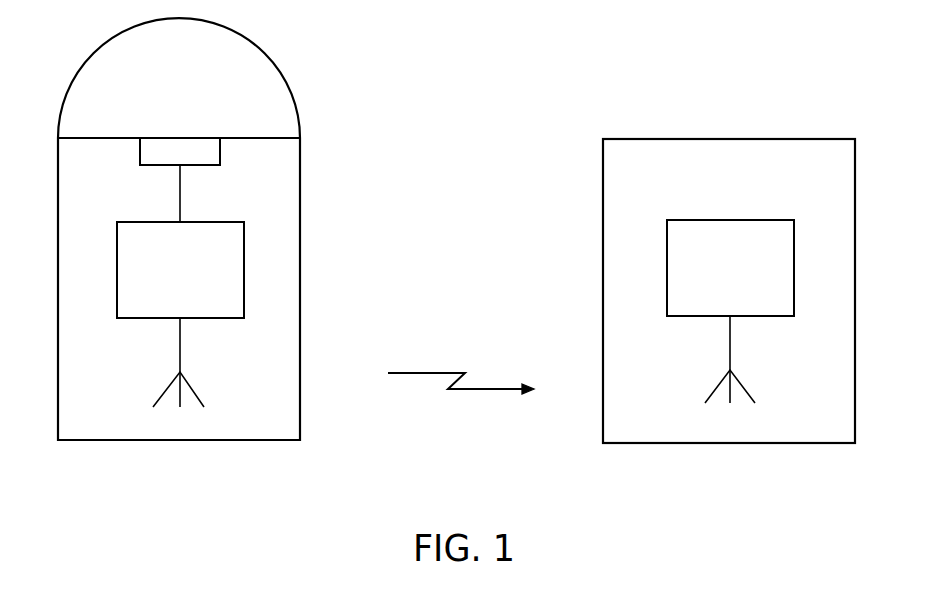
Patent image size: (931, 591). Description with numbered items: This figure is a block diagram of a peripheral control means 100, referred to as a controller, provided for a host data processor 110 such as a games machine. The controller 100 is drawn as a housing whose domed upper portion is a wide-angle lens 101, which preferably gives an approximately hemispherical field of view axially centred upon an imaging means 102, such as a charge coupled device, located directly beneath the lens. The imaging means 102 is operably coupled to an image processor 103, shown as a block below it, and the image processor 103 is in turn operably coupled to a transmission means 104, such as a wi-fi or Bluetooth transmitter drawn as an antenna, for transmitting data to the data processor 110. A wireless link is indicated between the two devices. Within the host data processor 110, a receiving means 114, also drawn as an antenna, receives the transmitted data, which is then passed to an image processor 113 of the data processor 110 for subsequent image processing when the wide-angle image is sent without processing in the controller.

The peripheral control means 100 is at (207, 494).
The wide-angle lens 101 is at (276, 61).
The imaging means 102 is at (142, 153).
The image processor 103 is at (225, 222).
The transmission means 104 is at (193, 391).
The host data processor 110 is at (835, 187).
The image processor 113 is at (785, 262).
The receiving means 114 is at (745, 388).